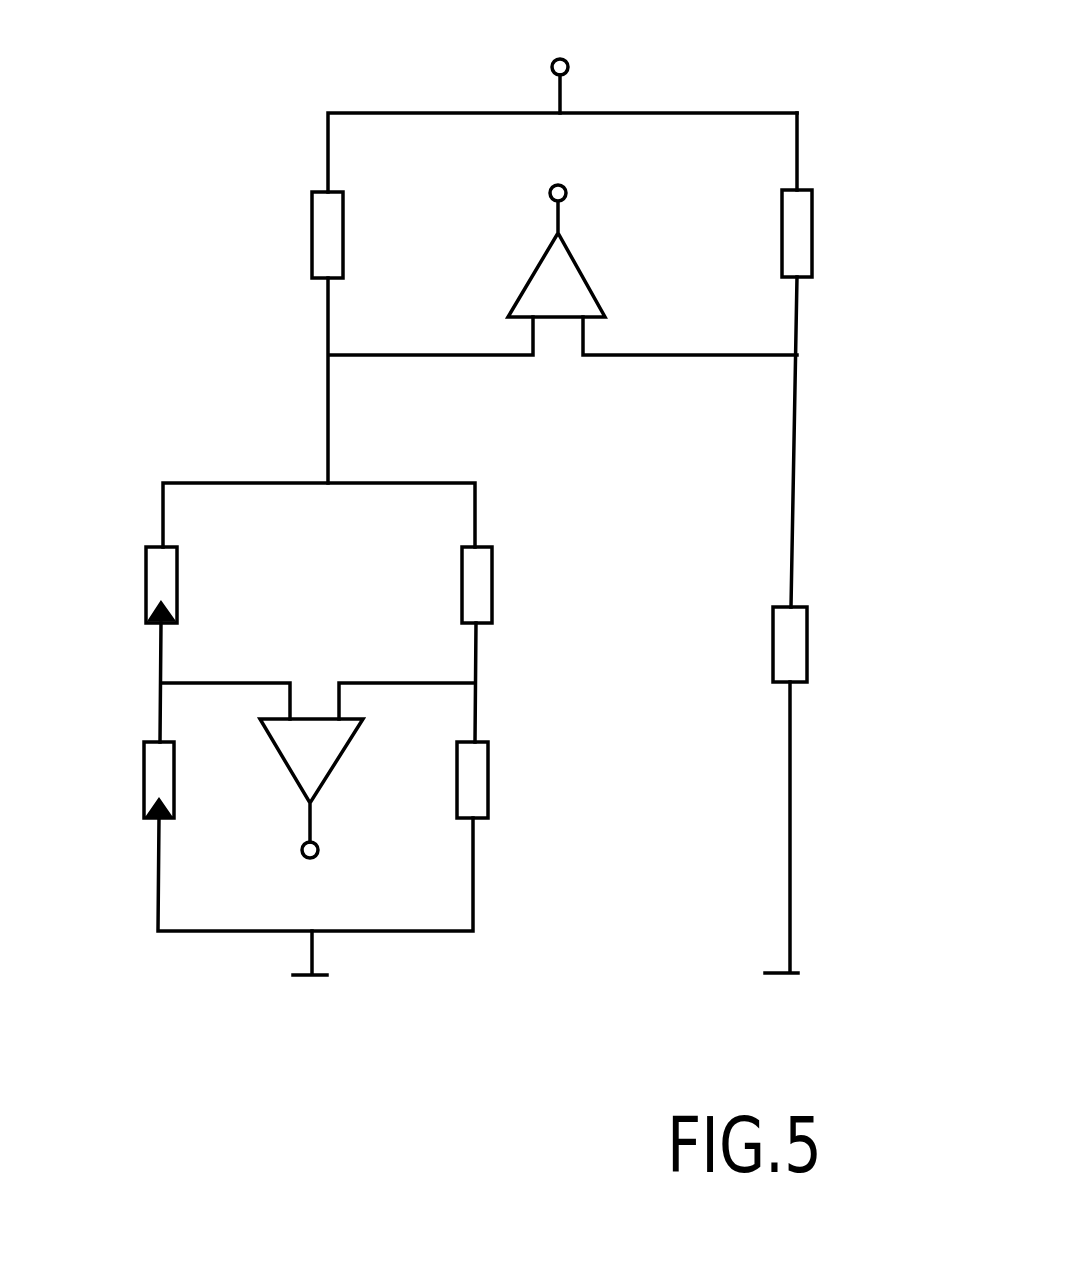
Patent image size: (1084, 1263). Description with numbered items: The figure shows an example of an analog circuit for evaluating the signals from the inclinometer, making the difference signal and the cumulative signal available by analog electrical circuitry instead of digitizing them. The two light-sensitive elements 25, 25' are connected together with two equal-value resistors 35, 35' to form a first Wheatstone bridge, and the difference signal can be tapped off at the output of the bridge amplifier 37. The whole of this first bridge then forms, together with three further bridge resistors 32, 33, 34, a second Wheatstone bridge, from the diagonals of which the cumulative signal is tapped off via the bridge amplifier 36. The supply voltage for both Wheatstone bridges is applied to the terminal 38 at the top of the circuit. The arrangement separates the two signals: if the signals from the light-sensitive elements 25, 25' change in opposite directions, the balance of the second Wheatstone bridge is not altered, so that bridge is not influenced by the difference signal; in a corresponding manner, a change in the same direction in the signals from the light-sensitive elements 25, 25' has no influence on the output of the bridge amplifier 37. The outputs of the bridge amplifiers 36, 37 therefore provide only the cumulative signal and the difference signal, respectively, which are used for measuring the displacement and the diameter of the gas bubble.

The light-sensitive element 25 is at (122, 585).
The light-sensitive element 25' is at (121, 775).
The bridge resistor 32 is at (325, 233).
The bridge resistor 33 is at (800, 227).
The bridge resistor 34 is at (792, 640).
The resistor 35 is at (524, 582).
The resistor 35' is at (524, 773).
The bridge amplifier 36 is at (573, 292).
The bridge amplifier 37 is at (320, 747).
The terminal 38 is at (571, 57).